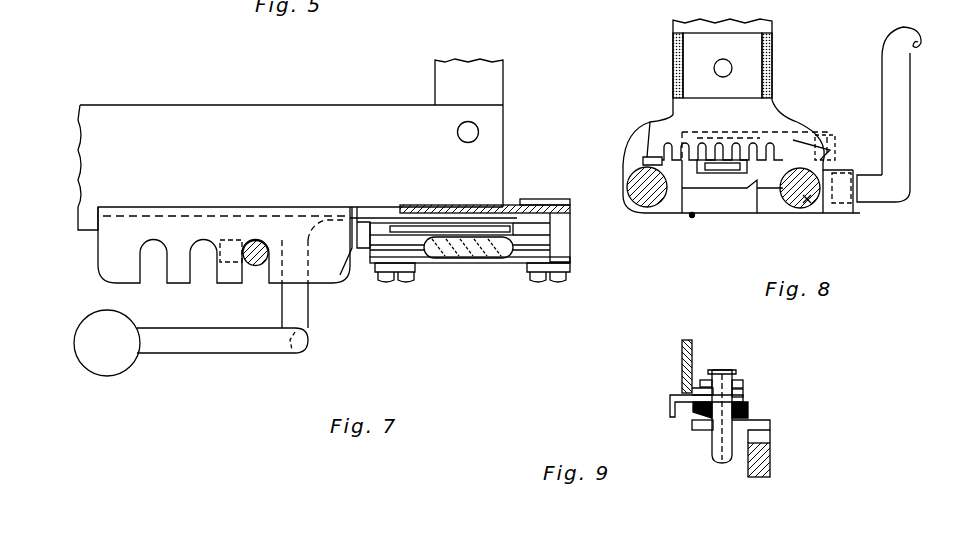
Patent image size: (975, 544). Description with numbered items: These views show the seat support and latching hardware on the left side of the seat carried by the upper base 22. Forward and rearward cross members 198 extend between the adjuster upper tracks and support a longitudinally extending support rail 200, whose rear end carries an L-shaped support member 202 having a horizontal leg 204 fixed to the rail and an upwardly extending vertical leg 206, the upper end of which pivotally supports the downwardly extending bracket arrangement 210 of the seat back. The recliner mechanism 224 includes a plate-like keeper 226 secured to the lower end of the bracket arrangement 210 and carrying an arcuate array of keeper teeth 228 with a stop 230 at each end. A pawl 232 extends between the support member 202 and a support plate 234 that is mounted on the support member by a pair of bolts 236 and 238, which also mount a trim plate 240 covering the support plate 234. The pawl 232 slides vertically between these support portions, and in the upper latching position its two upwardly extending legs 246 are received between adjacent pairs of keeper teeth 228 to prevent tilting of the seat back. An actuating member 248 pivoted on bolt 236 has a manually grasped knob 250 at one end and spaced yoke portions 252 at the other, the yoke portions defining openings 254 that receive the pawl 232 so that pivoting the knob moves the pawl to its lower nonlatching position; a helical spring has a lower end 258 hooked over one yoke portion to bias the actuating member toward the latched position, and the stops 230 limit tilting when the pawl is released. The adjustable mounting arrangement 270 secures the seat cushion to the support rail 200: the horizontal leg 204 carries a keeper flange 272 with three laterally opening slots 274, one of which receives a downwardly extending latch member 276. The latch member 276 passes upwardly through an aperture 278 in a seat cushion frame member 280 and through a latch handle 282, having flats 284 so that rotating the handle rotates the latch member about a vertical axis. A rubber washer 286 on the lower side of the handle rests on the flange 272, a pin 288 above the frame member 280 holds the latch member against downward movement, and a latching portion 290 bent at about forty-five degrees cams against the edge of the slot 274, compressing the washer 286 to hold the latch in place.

In FIG. 7, the upper base 22 is at (511, 82).
In FIG. 7, the cross member 198 is at (452, 75).
In FIG. 7, the support rail 200 is at (257, 133).
In FIG. 7, the support member 202 is at (372, 205).
In FIG. 9, the support member 202 is at (767, 467).
In FIG. 7, the horizontal leg 204 is at (150, 218).
In FIG. 7, the vertical leg 206 is at (468, 205).
In FIG. 7, the bracket arrangement 210 is at (447, 247).
In FIG. 8, the bracket arrangement 210 is at (683, 22).
In FIG. 7, the recliner mechanism 224 is at (463, 280).
In FIG. 8, the recliner mechanism 224 is at (660, 85).
In FIG. 7, the keeper 226 is at (527, 200).
In FIG. 8, the keeper 226 is at (780, 98).
In FIG. 8, the keeper teeth 228 is at (820, 136).
In FIG. 8, the stop 230 is at (645, 145).
In FIG. 8, the pawl 232 is at (728, 160).
In FIG. 7, the support plate 234 is at (517, 253).
In FIG. 8, the support plate 234 is at (800, 130).
In FIG. 7, the bolt 236 is at (393, 267).
In FIG. 8, the bolt 236 is at (817, 200).
In FIG. 7, the bolt 238 is at (553, 273).
In FIG. 8, the bolt 238 is at (640, 190).
In FIG. 7, the trim plate 240 is at (500, 247).
In FIG. 8, the pawl legs 246 is at (712, 150).
In FIG. 7, the actuating member 248 is at (250, 340).
In FIG. 8, the actuating member 248 is at (882, 58).
In FIG. 7, the knob 250 is at (112, 372).
In FIG. 7, the yoke portions 252 is at (368, 203).
In FIG. 8, the yoke portions 252 is at (760, 197).
In FIG. 8, the openings 254 is at (700, 163).
In FIG. 8, the lower end 258 is at (690, 218).
In FIG. 7, the adjustable mounting arrangement 270 is at (100, 262).
In FIG. 9, the adjustable mounting arrangement 270 is at (797, 377).
In FIG. 7, the keeper flange 272 is at (118, 235).
In FIG. 9, the keeper flange 272 is at (760, 433).
In FIG. 7, the slots 274 is at (140, 270).
In FIG. 7, the latch member 276 is at (261, 242).
In FIG. 9, the latch member 276 is at (733, 410).
In FIG. 9, the aperture 278 is at (725, 380).
In FIG. 9, the seat cushion frame member 280 is at (700, 390).
In FIG. 9, the latch handle 282 is at (677, 400).
In FIG. 9, the flats 284 is at (710, 380).
In FIG. 9, the rubber washer 286 is at (697, 417).
In FIG. 9, the pin 288 is at (740, 378).
In FIG. 7, the latching portion 290 is at (228, 240).
In FIG. 9, the latching portion 290 is at (718, 460).